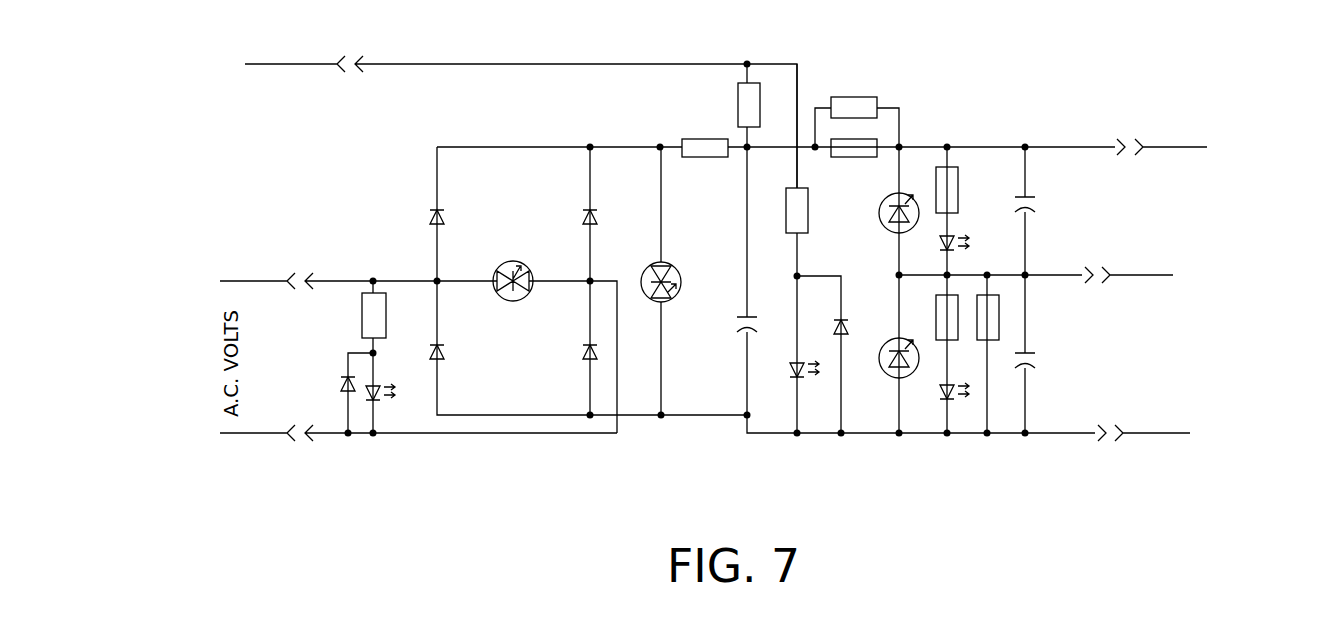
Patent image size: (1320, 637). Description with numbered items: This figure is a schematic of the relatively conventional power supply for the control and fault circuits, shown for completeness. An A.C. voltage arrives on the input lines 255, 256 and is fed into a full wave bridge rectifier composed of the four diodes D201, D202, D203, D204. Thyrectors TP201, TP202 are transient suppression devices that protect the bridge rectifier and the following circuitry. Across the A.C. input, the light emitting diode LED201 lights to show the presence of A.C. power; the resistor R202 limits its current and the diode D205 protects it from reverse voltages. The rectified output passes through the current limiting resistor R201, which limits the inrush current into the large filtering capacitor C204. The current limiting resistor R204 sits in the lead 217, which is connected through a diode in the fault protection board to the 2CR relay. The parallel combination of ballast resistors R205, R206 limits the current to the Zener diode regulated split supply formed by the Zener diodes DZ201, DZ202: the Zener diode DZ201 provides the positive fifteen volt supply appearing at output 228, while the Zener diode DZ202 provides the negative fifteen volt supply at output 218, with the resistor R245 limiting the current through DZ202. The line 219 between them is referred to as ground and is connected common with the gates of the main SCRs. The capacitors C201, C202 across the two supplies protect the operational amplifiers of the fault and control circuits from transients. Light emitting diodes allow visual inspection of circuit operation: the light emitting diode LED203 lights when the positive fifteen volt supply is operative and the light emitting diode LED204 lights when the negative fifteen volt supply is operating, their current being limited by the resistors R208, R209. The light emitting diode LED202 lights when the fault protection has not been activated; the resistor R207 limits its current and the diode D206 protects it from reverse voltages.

The lead 217 is at (496, 121).
The A.C. volts input line 256 is at (393, 351).
The A.C. volts input line 255 is at (271, 431).
The +15 volts regulated output 228 is at (1156, 134).
The ground line 219 is at (1116, 283).
The -15 volts regulated output 218 is at (1159, 446).
The bridge rectifier diode D201 is at (410, 203).
The bridge rectifier diode D202 is at (460, 363).
The bridge rectifier diode D203 is at (566, 203).
The bridge rectifier diode D204 is at (562, 363).
The diode D205 is at (327, 393).
The diode D206 is at (862, 314).
The thyrector TP201 is at (509, 293).
The thyrector TP202 is at (640, 267).
The current limiting resistor R201 is at (705, 148).
The resistor R202 is at (374, 317).
The current limiting resistor R204 is at (749, 105).
The ballast resistor R205 is at (854, 107).
The ballast resistor R206 is at (854, 148).
The resistor R207 is at (797, 210).
The resistor R208 is at (947, 190).
The resistor R209 is at (947, 317).
The resistor R245 is at (988, 317).
The capacitor C201 is at (1051, 205).
The capacitor C202 is at (1052, 361).
The filtering capacitor C204 is at (761, 316).
The Zener diode DZ201 is at (871, 201).
The Zener diode DZ202 is at (881, 368).
The light emitting diode LED201 is at (393, 394).
The light emitting diode LED202 is at (788, 387).
The light emitting diode LED203 is at (969, 226).
The light emitting diode LED204 is at (937, 409).